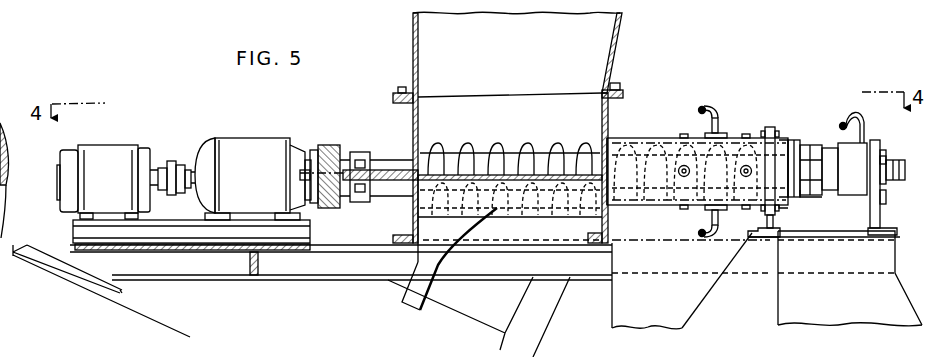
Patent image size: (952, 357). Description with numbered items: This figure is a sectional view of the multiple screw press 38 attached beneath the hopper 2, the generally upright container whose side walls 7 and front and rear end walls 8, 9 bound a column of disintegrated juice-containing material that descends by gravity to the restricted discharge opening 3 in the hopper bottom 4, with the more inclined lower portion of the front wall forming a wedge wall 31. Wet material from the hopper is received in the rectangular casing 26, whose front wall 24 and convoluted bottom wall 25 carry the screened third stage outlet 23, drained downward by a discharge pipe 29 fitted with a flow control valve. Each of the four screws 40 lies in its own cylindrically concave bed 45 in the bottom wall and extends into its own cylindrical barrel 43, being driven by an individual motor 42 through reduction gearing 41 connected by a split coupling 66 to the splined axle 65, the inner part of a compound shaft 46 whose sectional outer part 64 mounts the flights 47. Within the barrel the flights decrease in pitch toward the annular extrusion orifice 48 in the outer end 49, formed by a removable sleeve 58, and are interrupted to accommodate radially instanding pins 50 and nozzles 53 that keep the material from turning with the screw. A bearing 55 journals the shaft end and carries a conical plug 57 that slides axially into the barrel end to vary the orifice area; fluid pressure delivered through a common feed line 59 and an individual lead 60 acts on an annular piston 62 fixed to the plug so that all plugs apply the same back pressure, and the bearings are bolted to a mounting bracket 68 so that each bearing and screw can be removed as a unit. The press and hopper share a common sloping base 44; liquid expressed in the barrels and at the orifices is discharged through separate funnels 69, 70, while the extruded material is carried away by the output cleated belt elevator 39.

The container 2 is at (515, 127).
The discharge opening 3 is at (511, 95).
The bottom 4 is at (623, 90).
The side walls 7 is at (513, 51).
The front wall 8 is at (418, 37).
The rear wall 9 is at (620, 42).
The third stage outlet 23 is at (456, 234).
The front wall of casing 24 is at (413, 133).
The bottom wall of casing 25 is at (510, 221).
The casing 26 is at (609, 114).
The discharge pipe 29 is at (410, 300).
The wedge wall 31 is at (418, 71).
The screw press 38 is at (770, 124).
The output cleated belt elevator 39 is at (479, 317).
The screws 40 is at (510, 146).
The reduction gearing 41 is at (262, 184).
The motor 42 is at (115, 187).
The barrel 43 is at (664, 206).
The base 44 is at (313, 283).
The bed 45 is at (562, 214).
The shaft 46 is at (546, 153).
The flights 47 is at (472, 151).
The extrusion orifice 48 is at (793, 142).
The outer end of barrel 49 is at (780, 138).
The pins 50 is at (716, 178).
The nozzles 53 is at (713, 171).
The bearing 55 is at (811, 158).
The plug 57 is at (791, 196).
The removable sleeve 58 is at (778, 206).
The common feed line 59 is at (842, 126).
The lead 60 is at (855, 114).
The annular piston 62 is at (834, 157).
The outer part of shaft 64 is at (627, 206).
The axle 65 is at (10, 169).
The split coupling 66 is at (358, 152).
The mounting bracket 68 is at (881, 219).
The funnel 69 is at (712, 291).
The funnel 70 is at (778, 314).